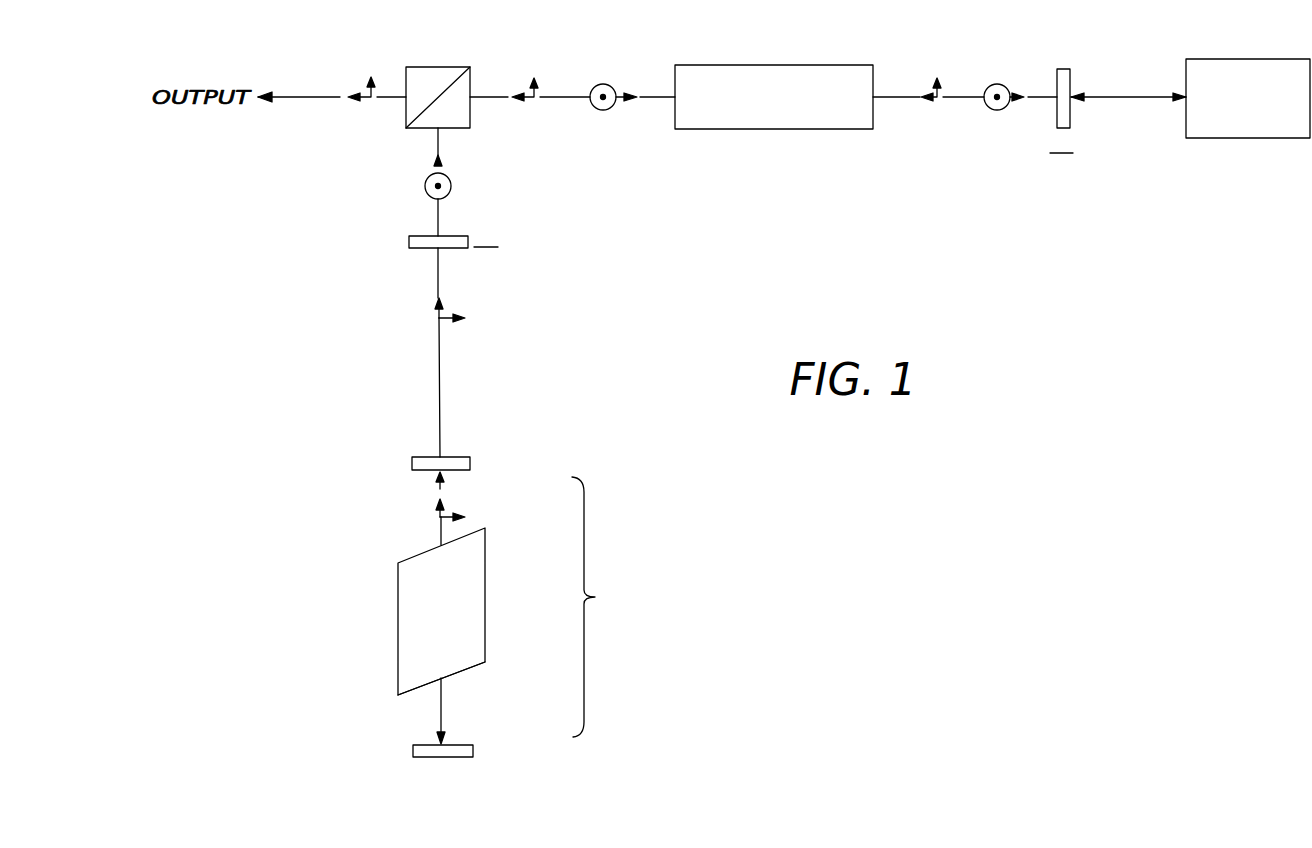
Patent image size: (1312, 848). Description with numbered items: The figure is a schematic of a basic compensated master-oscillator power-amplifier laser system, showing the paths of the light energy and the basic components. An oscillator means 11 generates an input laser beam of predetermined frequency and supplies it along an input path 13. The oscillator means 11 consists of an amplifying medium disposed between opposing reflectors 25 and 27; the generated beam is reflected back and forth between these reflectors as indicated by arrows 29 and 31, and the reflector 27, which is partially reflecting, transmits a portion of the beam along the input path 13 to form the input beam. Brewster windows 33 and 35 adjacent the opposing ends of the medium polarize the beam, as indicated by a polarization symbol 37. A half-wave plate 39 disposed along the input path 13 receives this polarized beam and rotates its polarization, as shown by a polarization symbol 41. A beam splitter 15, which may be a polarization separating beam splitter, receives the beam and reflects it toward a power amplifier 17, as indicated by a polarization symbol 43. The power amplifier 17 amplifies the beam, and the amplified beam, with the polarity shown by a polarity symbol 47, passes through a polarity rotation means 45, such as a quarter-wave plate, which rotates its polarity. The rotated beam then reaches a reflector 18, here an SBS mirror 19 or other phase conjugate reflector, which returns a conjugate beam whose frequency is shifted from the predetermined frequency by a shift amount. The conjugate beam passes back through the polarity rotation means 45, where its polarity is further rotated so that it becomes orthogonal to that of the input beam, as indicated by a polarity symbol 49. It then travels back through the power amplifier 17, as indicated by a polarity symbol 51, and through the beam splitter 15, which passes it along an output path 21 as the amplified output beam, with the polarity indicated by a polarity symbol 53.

The oscillator means 11 is at (600, 607).
The input path 13 is at (437, 142).
The beam splitter 15 is at (451, 67).
The power amplifier 17 is at (818, 65).
The reflector 18 is at (1186, 72).
The SBS mirror 19 is at (1283, 59).
The output path 21 is at (296, 100).
The reflector 25 is at (413, 750).
The reflector 27 is at (412, 462).
The arrow 29 is at (440, 487).
The arrow 31 is at (446, 740).
The Brewster window 33 is at (398, 563).
The Brewster window 35 is at (401, 697).
The polarization symbol 37 is at (439, 318).
The half-wave plate 39 is at (409, 242).
The polarization symbol 41 is at (451, 186).
The polarization symbol 43 is at (603, 110).
The polarity rotation means 45 is at (1063, 69).
The polarity symbol 47 is at (995, 110).
The polarity symbol 49 is at (935, 103).
The polarity symbol 51 is at (533, 102).
The polarity symbol 53 is at (368, 100).